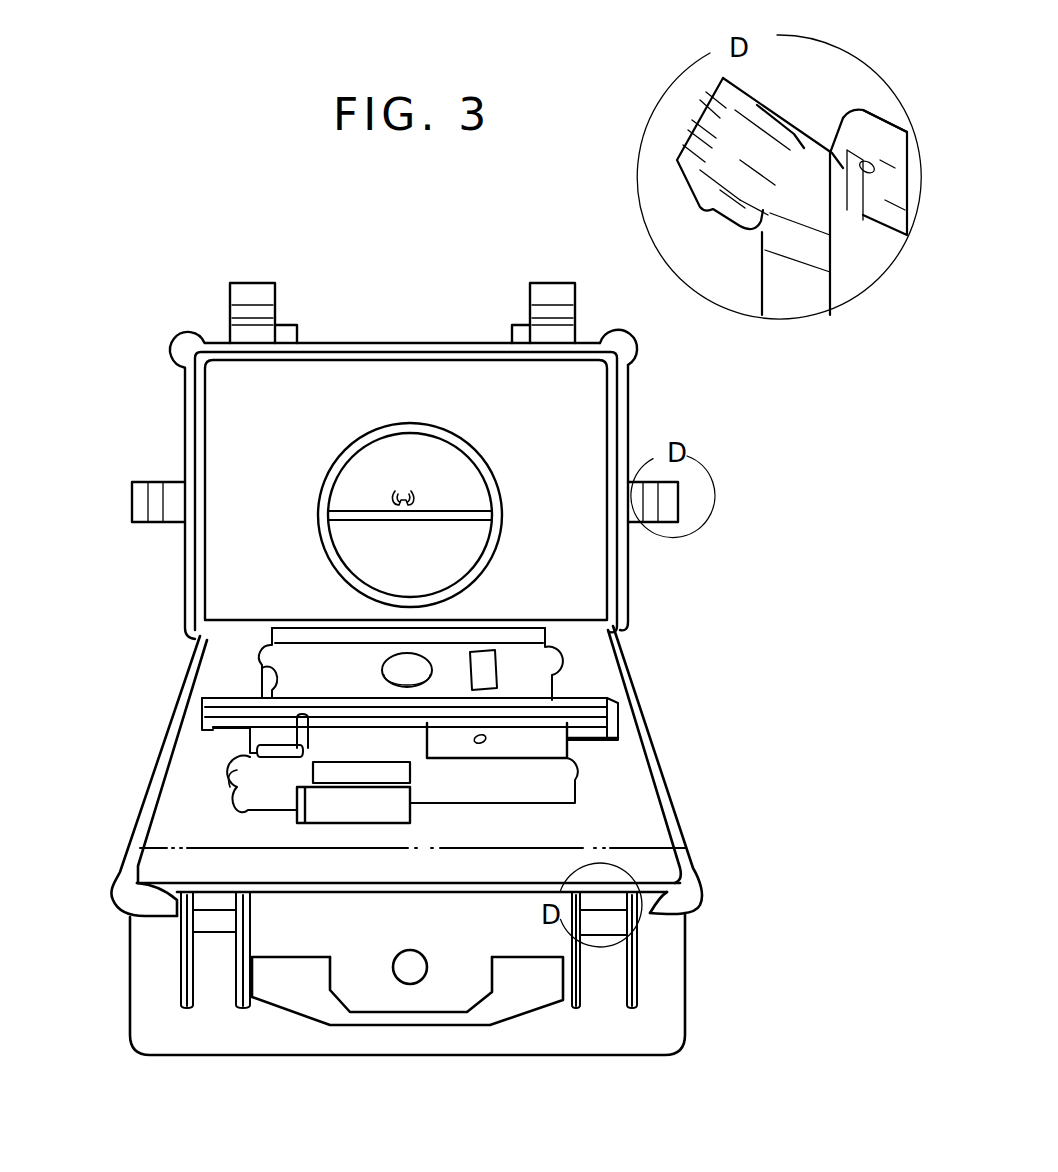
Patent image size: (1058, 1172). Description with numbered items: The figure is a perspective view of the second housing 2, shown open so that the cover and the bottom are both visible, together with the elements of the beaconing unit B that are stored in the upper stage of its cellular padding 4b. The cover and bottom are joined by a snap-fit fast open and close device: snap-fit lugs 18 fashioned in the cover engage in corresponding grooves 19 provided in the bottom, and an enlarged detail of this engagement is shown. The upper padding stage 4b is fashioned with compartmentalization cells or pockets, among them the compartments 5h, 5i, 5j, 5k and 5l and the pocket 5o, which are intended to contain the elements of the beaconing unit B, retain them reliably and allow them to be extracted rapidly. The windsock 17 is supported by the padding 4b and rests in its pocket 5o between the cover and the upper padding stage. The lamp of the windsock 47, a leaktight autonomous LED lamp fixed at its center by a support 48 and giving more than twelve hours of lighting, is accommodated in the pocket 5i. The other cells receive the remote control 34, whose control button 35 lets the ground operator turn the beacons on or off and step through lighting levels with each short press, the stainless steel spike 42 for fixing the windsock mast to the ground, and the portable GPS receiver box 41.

The second housing 2 is at (658, 1060).
The upper cellular padding stage 4b is at (595, 657).
The windsock 17 is at (492, 562).
The snap-fit lugs 18 is at (550, 293).
The grooves 19 is at (218, 925).
The remote control 34 is at (535, 745).
The control button 35 is at (487, 737).
The portable GPS receiver box 41 is at (374, 808).
The stainless steel spike 42 is at (540, 700).
The lamp of the windsock 47 is at (411, 772).
The support 48 is at (403, 497).
The compartment 5h is at (270, 797).
The pocket 5i is at (215, 775).
The compartment 5j is at (295, 748).
The compartment 5k is at (258, 750).
The compartment 5l is at (492, 652).
The pocket 5o is at (250, 655).
The beaconing unit B is at (201, 1024).